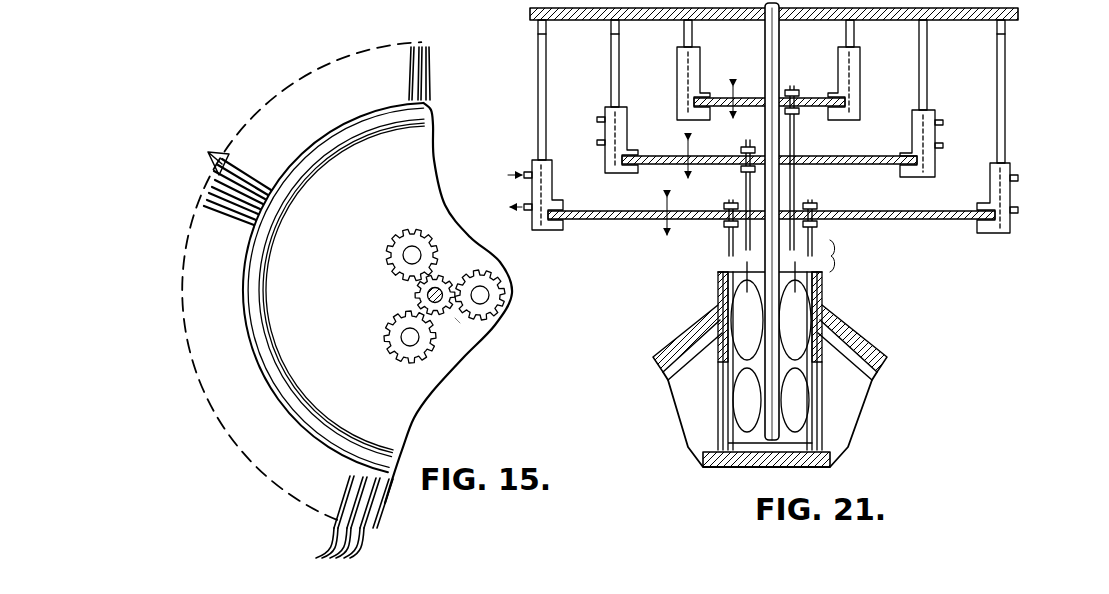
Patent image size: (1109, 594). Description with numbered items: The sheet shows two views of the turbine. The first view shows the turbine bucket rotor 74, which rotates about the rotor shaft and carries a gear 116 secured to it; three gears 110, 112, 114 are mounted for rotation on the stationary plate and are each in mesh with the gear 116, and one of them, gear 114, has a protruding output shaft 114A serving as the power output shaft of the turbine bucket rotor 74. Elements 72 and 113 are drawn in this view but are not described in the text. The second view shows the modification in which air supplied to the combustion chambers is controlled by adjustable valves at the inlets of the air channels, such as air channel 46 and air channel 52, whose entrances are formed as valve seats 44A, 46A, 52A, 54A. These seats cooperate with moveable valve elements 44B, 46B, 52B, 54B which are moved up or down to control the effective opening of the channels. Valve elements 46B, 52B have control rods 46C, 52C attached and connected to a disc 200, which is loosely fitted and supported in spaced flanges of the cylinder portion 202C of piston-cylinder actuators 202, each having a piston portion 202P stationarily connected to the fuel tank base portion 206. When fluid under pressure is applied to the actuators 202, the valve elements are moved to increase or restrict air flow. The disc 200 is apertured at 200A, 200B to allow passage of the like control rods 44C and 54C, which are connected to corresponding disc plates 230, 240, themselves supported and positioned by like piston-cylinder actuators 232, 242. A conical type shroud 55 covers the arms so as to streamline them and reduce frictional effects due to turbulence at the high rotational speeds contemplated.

In FIG. 15, the brushes / fingers 72 is at (228, 156).
In FIG. 15, the turbine bucket rotor 74 is at (413, 417).
In FIG. 15, the gear 110 is at (395, 246).
In FIG. 15, the gear 112 is at (390, 345).
In FIG. 15, the central drive gear 113 is at (428, 295).
In FIG. 15, the gear 114 is at (492, 296).
In FIG. 15, the output shaft 114A is at (483, 300).
In FIG. 15, the gear 116 is at (444, 322).
In FIG. 21, the disc 200 is at (598, 220).
In FIG. 21, the aperture 200A is at (730, 210).
In FIG. 21, the aperture 200B is at (798, 210).
In FIG. 21, the piston-cylinder actuator 202 is at (563, 190).
In FIG. 21, the cylinder portion 202C is at (553, 180).
In FIG. 21, the piston portion 202P is at (540, 95).
In FIG. 21, the fuel tank base portion 206 is at (598, 20).
In FIG. 21, the disc plate 230 is at (736, 97).
In FIG. 21, the piston-cylinder actuator 232 is at (675, 95).
In FIG. 21, the disc plate 240 is at (646, 156).
In FIG. 21, the piston-cylinder actuator 242 is at (603, 139).
In FIG. 21, the valve seat 44A is at (797, 412).
In FIG. 21, the valve element 44B is at (790, 310).
In FIG. 21, the control rod 44C is at (794, 152).
In FIG. 21, the air channel 46 is at (893, 384).
In FIG. 21, the valve seat 46A is at (818, 390).
In FIG. 21, the valve element 46B is at (815, 322).
In FIG. 21, the control rod 46C is at (813, 240).
In FIG. 21, the air channel 52 is at (670, 370).
In FIG. 21, the valve seat 52A is at (728, 393).
In FIG. 21, the valve element 52B is at (740, 305).
In FIG. 21, the control rod 52C is at (730, 236).
In FIG. 21, the valve seat 54A is at (747, 432).
In FIG. 21, the valve element 54B is at (755, 283).
In FIG. 21, the control rod 54C is at (742, 165).
In FIG. 21, the conical shroud 55 is at (870, 345).